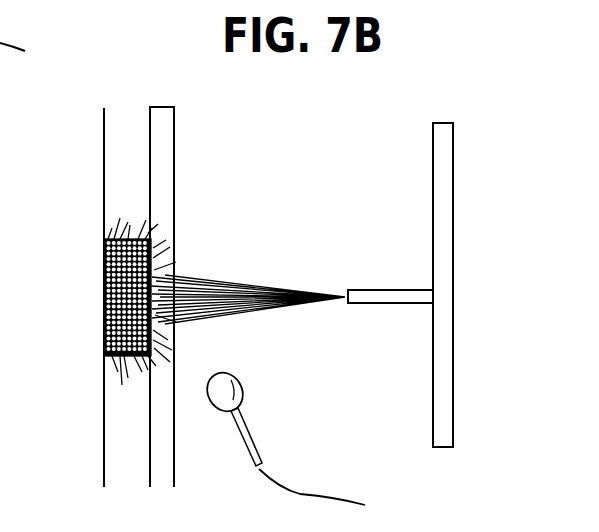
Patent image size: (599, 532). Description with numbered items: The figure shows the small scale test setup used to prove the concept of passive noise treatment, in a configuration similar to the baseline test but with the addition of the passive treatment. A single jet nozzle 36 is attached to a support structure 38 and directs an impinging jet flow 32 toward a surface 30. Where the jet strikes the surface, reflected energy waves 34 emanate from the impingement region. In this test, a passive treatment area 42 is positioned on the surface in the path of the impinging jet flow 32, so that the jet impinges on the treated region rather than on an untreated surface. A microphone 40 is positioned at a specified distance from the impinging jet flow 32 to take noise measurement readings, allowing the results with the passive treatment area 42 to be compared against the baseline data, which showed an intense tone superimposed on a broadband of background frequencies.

The surface 30 is at (174, 134).
The impinging jet flow 32 is at (212, 277).
The reflected energy waves 34 is at (146, 233).
The jet nozzle 36 is at (383, 290).
The support structure 38 is at (433, 153).
The microphone 40 is at (247, 452).
The passive treatment area 42 is at (105, 297).